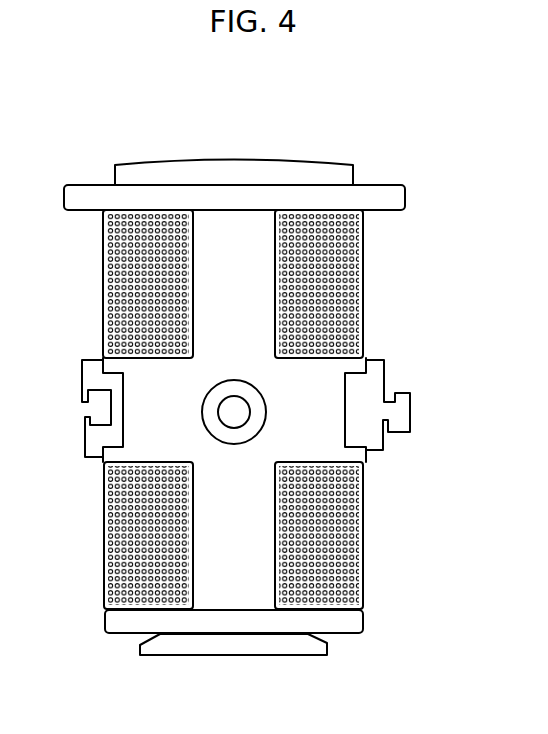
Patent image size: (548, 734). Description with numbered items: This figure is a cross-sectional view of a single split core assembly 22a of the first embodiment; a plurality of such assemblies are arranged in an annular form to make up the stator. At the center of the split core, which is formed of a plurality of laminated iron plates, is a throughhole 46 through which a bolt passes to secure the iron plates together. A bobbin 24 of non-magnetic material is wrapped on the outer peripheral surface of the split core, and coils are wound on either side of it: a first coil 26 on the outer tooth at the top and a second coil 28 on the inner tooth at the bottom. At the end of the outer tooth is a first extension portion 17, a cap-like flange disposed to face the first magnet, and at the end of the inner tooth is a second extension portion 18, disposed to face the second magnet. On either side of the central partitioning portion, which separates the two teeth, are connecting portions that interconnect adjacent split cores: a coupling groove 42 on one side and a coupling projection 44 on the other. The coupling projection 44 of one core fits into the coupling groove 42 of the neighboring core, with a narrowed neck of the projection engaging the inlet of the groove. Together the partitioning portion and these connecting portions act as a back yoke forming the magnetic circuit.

The first extension portion 17 is at (234, 158).
The split core assembly 22a is at (378, 150).
The first coil 26 is at (105, 253).
The second coil 28 is at (105, 545).
The bobbin 24 is at (245, 528).
The coupling groove 42 is at (110, 425).
The coupling projection 44 is at (405, 415).
The throughhole 46 is at (235, 413).
The second extension portion 18 is at (277, 647).